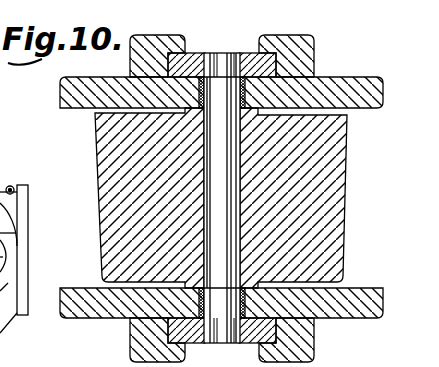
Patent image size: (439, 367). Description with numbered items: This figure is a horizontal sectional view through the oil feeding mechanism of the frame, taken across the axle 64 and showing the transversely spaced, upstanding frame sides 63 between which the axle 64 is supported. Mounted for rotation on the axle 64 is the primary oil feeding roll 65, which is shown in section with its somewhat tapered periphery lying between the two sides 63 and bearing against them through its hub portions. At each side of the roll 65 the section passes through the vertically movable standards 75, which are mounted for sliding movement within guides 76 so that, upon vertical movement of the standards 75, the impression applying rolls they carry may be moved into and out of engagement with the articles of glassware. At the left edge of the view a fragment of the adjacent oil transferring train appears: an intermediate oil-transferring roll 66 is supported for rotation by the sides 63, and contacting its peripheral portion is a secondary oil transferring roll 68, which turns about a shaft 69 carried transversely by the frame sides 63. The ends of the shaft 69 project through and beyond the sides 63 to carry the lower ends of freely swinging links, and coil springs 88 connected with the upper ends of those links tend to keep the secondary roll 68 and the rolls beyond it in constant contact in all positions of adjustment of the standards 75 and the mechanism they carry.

The frame sides 63 is at (338, 78).
The axle 64 is at (218, 80).
The primary oil feeding roll 65 is at (344, 212).
The intermediate oil-transferring rolls 66 is at (14, 317).
The secondary oil transferring rolls 68 is at (0, 236).
The shafts 69 is at (0, 257).
The standards 75 is at (246, 53).
The guides 76 is at (315, 50).
The coil springs 88 is at (2, 185).